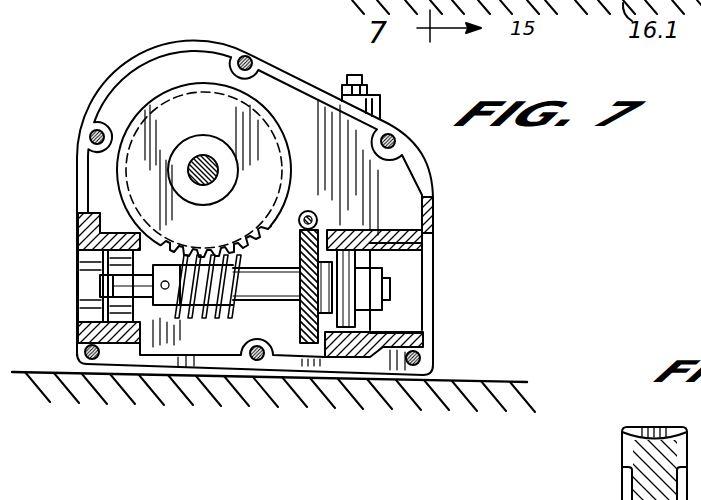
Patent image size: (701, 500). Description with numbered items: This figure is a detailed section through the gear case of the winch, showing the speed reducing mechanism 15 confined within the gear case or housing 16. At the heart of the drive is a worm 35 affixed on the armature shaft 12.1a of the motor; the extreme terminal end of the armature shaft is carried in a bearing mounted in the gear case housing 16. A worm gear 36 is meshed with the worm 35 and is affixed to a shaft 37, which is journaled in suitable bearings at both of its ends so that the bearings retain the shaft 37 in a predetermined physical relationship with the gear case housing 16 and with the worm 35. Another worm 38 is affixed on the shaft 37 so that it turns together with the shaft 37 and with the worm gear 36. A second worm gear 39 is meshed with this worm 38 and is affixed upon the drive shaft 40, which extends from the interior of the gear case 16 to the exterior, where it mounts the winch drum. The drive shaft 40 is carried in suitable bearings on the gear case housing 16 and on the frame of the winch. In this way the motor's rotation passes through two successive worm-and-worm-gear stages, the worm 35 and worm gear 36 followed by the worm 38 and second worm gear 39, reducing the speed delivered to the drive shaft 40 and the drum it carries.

The gear case housing 16 is at (214, 42).
The speed reducing mechanism 15 is at (266, 103).
The second worm gear 39 is at (152, 115).
The drive shaft 40 is at (193, 173).
The worm 38 is at (196, 314).
The shaft 37 is at (258, 300).
The worm gear 36 is at (297, 320).
The worm 35 is at (308, 211).
The armature shaft 12.1a is at (316, 212).